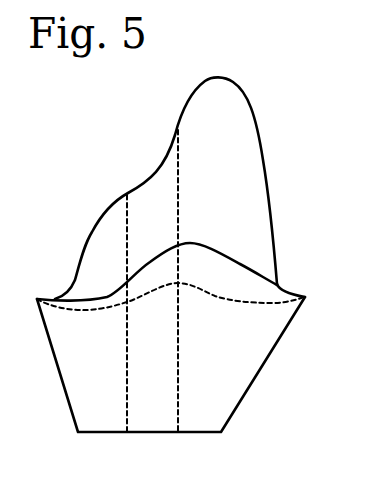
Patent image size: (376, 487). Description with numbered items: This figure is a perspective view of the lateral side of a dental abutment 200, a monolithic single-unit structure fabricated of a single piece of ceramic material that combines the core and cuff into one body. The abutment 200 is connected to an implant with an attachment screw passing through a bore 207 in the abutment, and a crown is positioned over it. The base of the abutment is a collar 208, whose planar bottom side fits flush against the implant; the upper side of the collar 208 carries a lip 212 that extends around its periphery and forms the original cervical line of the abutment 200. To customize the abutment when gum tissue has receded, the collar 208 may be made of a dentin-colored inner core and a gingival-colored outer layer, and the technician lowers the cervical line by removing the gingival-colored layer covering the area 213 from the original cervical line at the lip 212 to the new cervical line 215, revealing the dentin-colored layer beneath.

The abutment 200 is at (233, 50).
The bore 207 is at (177, 185).
The collar 208 is at (273, 351).
The lip 212 is at (193, 241).
The area 213 is at (237, 285).
The new cervical line 215 is at (272, 293).